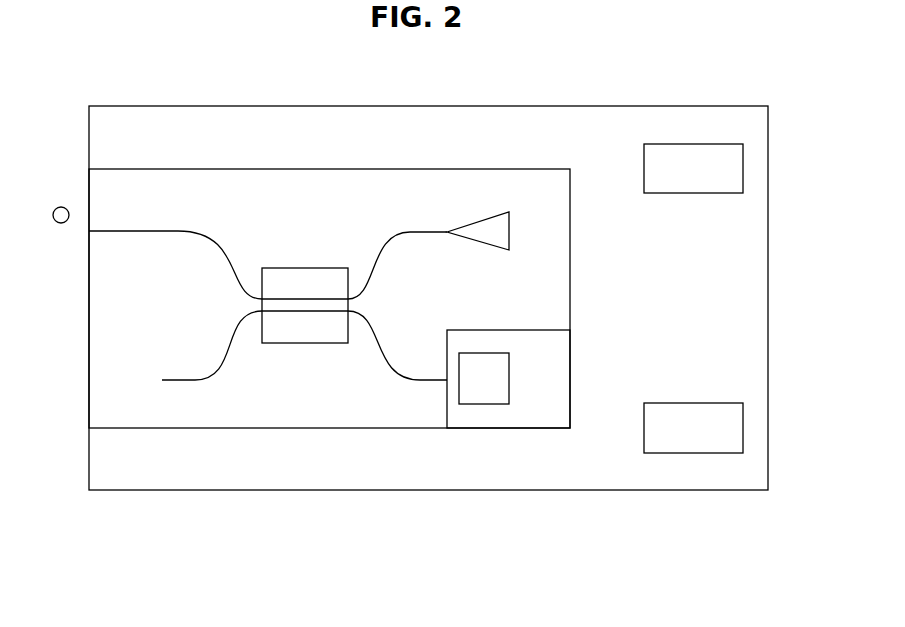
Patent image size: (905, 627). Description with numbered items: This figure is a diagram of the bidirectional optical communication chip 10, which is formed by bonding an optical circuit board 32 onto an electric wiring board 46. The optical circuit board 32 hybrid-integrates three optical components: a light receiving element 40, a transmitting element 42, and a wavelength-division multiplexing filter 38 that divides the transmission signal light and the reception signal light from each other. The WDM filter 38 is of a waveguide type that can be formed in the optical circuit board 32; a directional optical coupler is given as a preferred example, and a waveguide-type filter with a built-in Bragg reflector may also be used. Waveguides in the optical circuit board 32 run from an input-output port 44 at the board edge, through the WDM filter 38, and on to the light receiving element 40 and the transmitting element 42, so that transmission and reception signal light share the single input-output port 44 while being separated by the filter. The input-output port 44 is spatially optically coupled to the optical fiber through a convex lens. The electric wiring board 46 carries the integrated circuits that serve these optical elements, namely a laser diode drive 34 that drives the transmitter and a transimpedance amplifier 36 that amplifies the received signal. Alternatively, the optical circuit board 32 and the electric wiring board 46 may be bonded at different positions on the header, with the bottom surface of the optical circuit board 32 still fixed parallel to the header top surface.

The bidirectional optical communication chip 10 is at (722, 75).
The optical circuit board 32 is at (300, 410).
The laser diode drive (LDD) 34 is at (743, 430).
The transimpedance amplifier (TIA) 36 is at (743, 170).
The wavelength-division multiplexing (WDM) filter 38 is at (304, 283).
The light receiving element 40 is at (485, 230).
The transmitting element 42 is at (483, 388).
The input-output port 44 is at (84, 231).
The electric wiring board 46 is at (563, 122).